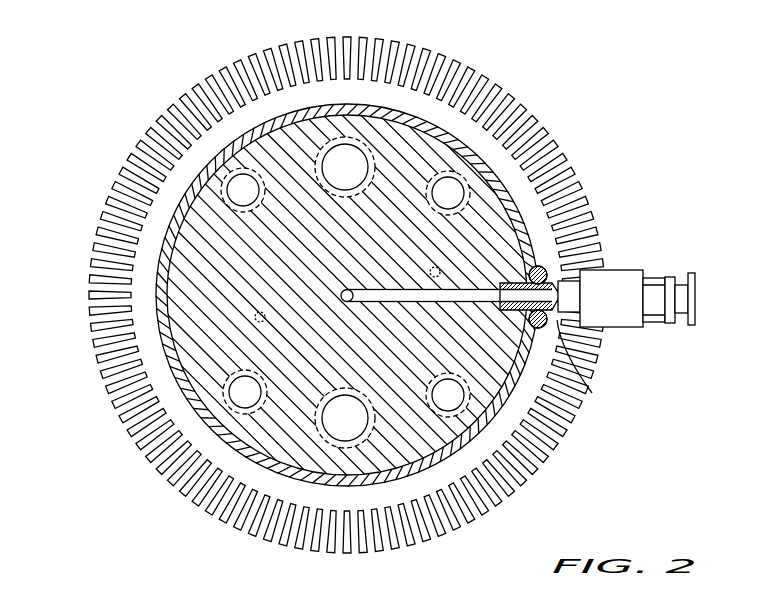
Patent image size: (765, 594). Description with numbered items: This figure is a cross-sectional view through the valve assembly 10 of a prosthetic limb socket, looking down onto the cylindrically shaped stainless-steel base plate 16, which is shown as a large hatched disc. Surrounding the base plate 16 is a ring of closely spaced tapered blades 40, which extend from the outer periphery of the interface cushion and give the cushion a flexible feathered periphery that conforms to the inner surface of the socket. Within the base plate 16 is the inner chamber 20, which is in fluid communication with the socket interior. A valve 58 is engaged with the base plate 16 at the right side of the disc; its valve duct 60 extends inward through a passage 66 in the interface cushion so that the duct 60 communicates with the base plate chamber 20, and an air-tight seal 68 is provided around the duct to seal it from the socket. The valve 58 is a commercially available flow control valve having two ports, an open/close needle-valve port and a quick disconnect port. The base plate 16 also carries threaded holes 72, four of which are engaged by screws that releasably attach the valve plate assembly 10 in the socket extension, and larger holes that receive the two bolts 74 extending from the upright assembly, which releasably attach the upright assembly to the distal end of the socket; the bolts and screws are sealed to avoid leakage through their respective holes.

The valve assembly 10 is at (80, 138).
The base plate 16 is at (302, 276).
The inner chamber 20 is at (452, 262).
The tapered blades 40 is at (183, 92).
The valve 58 is at (686, 264).
The valve duct 60 is at (597, 242).
The passage 66 is at (564, 320).
The air-tight seal 68 is at (592, 393).
The threaded holes 72 is at (435, 376).
The bolts 74 is at (339, 388).